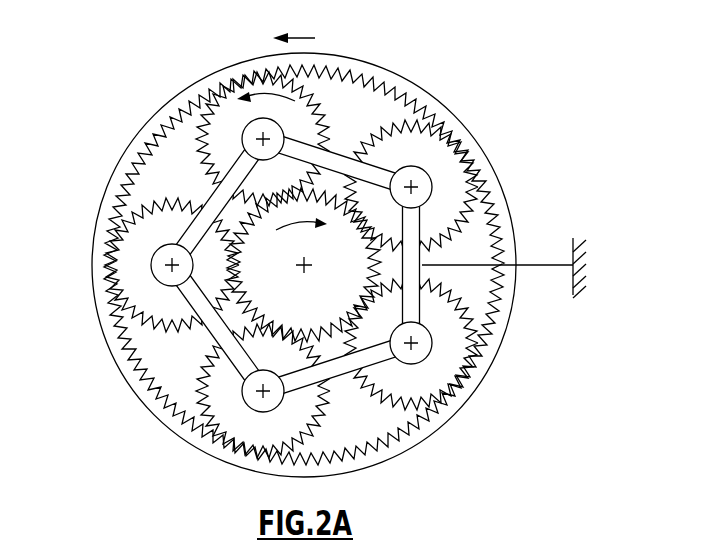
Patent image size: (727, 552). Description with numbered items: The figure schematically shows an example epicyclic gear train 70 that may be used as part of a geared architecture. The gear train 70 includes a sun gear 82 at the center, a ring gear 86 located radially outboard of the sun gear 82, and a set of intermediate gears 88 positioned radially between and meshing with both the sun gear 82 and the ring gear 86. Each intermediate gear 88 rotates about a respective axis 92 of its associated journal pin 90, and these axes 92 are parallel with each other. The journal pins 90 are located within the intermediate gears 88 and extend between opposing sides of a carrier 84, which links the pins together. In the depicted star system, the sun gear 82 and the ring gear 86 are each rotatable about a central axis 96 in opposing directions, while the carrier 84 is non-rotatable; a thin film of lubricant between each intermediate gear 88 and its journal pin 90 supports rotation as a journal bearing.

The epicyclic gear train 70 is at (460, 56).
The sun gear 82 is at (318, 301).
The carrier 84 is at (220, 200).
The ring gear 86 is at (113, 350).
The intermediate gear 88 is at (322, 140).
The journal pin 90 is at (240, 133).
The axis 92 is at (272, 131).
The axis 96 is at (312, 258).